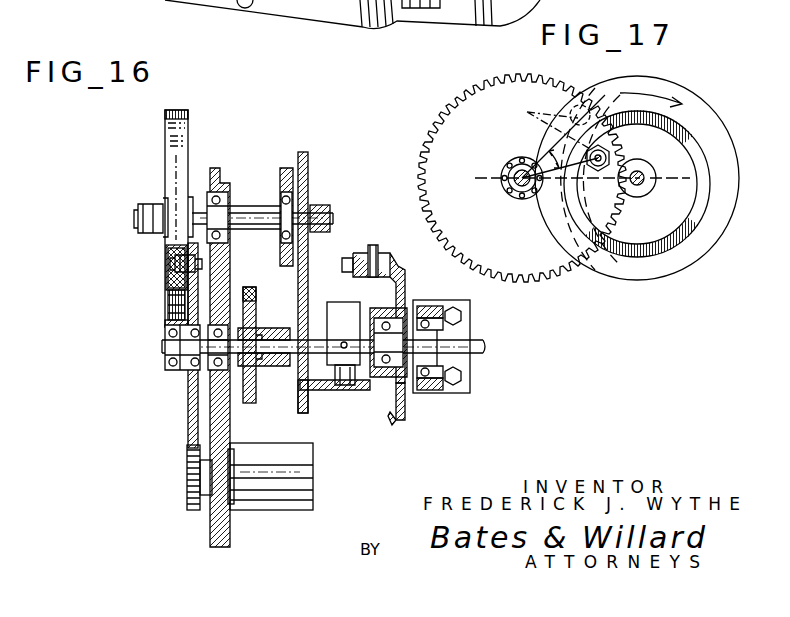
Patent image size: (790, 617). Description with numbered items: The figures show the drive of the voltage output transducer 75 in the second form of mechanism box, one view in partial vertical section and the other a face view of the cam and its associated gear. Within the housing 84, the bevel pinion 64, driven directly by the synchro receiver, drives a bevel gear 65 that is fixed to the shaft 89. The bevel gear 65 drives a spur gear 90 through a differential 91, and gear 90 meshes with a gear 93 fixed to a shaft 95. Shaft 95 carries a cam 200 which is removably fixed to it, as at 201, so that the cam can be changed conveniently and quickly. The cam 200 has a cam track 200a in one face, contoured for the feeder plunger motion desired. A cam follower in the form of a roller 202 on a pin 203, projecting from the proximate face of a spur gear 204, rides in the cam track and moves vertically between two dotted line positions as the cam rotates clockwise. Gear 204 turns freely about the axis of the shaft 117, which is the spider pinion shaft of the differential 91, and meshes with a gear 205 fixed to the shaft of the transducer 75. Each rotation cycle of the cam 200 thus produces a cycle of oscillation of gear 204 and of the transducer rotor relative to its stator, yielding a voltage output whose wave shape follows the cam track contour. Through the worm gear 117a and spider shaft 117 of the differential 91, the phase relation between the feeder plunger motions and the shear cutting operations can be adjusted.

In FIG. 16, the cam 200 is at (165, 137).
In FIG. 17, the cam 200 is at (705, 128).
In FIG. 16, the cam track 200a is at (168, 278).
In FIG. 17, the cam track 200a is at (688, 127).
In FIG. 16, the removable fixing of cam 201 is at (153, 205).
In FIG. 16, the roller 202 is at (172, 262).
In FIG. 17, the roller 202 is at (557, 179).
In FIG. 16, the pin 203 is at (168, 297).
In FIG. 16, the spur gear 204 is at (190, 412).
In FIG. 17, the spur gear 204 is at (462, 112).
In FIG. 16, the gear 205 is at (187, 485).
In FIG. 16, the voltage output transducer 75 is at (300, 468).
In FIG. 16, the housing 84 is at (283, 168).
In FIG. 16, the shaft 89 is at (483, 343).
In FIG. 16, the spur gear 90 is at (305, 410).
In FIG. 16, the differential 91 is at (335, 287).
In FIG. 16, the gear 93 is at (308, 165).
In FIG. 16, the shaft 95 is at (250, 212).
In FIG. 17, the shaft 95 is at (640, 186).
In FIG. 16, the spider pinion shaft 117 is at (263, 365).
In FIG. 17, the spider pinion shaft 117 is at (515, 192).
In FIG. 16, the worm gear 117a is at (256, 292).
In FIG. 16, the bevel pinion 64 is at (398, 270).
In FIG. 16, the bevel gear 65 is at (406, 413).